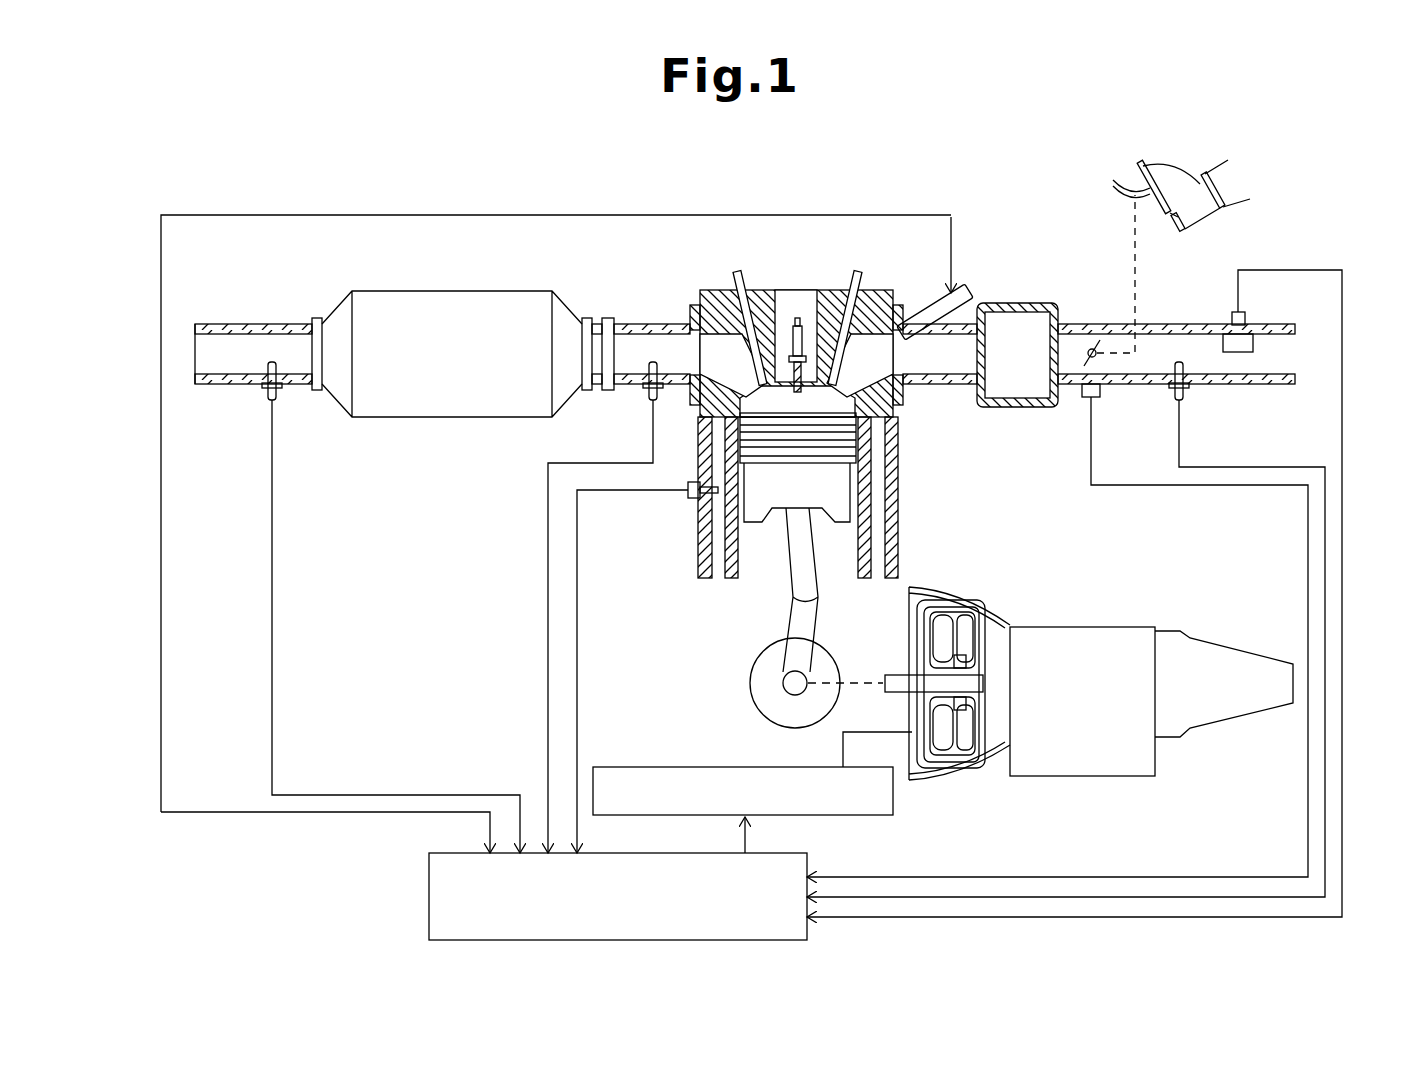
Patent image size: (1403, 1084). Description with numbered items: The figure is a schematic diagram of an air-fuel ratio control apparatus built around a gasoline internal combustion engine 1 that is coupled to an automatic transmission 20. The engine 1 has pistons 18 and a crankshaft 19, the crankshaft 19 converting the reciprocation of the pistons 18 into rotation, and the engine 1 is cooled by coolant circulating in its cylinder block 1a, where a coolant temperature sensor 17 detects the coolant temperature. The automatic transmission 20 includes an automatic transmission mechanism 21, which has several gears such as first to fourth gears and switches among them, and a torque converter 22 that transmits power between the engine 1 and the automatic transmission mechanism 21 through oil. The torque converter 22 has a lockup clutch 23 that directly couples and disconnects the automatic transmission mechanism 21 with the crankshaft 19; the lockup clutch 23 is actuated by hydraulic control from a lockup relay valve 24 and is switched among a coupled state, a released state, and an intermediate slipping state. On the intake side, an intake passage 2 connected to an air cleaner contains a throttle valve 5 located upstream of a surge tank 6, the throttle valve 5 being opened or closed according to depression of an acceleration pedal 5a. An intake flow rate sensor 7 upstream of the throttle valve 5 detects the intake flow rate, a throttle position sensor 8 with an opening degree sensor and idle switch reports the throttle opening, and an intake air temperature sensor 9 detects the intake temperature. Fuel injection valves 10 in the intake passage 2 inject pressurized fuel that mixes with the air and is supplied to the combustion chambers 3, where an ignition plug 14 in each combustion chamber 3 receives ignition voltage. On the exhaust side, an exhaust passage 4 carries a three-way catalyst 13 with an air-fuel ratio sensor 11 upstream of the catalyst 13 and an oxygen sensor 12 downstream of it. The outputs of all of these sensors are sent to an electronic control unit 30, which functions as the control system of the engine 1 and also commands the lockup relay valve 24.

The engine 1 is at (789, 310).
The cylinder block 1a is at (898, 466).
The intake passage 2 is at (1088, 320).
The combustion chamber 3 is at (824, 413).
The exhaust passage 4 is at (680, 300).
The throttle valve 5 is at (1088, 353).
The acceleration pedal 5a is at (1137, 170).
The surge tank 6 is at (1018, 305).
The intake flow rate sensor 7 is at (1228, 320).
The throttle position sensor 8 is at (1100, 390).
The intake air temperature sensor 9 is at (1186, 393).
The fuel injection valve 10 is at (963, 287).
The air-fuel ratio sensor 11 is at (643, 395).
The oxygen sensor 12 is at (262, 395).
The three-way catalyst 13 is at (390, 418).
The ignition plug 14 is at (800, 318).
The coolant temperature sensor 17 is at (690, 482).
The piston 18 is at (754, 516).
The crankshaft 19 is at (790, 683).
The automatic transmission 20 is at (1050, 652).
The automatic transmission mechanism 21 is at (1080, 630).
The torque converter 22 is at (950, 603).
The lockup clutch 23 is at (915, 620).
The lockup relay valve 24 is at (700, 767).
The electronic control unit (ECU) 30 is at (429, 895).